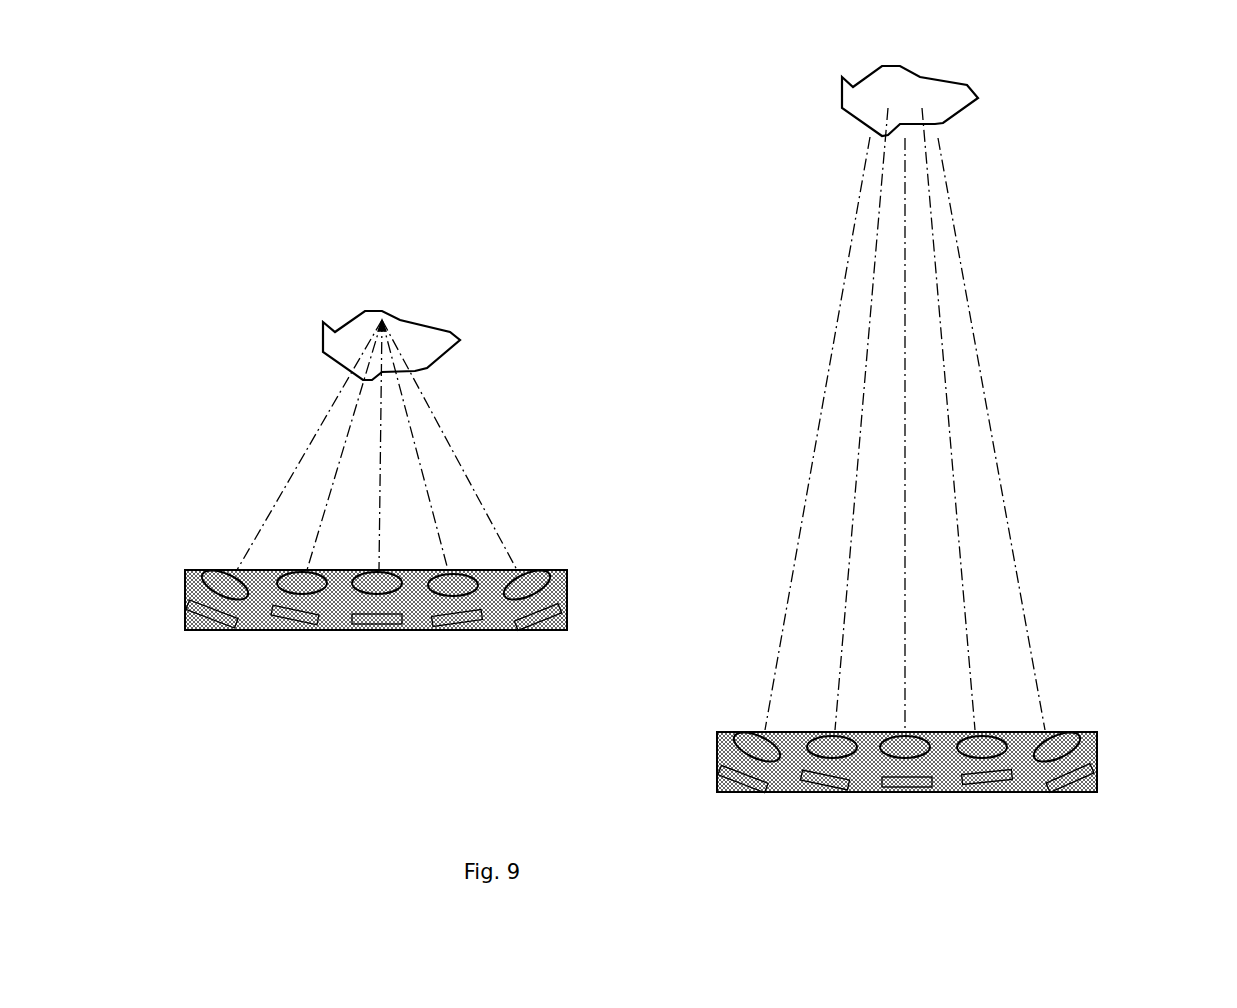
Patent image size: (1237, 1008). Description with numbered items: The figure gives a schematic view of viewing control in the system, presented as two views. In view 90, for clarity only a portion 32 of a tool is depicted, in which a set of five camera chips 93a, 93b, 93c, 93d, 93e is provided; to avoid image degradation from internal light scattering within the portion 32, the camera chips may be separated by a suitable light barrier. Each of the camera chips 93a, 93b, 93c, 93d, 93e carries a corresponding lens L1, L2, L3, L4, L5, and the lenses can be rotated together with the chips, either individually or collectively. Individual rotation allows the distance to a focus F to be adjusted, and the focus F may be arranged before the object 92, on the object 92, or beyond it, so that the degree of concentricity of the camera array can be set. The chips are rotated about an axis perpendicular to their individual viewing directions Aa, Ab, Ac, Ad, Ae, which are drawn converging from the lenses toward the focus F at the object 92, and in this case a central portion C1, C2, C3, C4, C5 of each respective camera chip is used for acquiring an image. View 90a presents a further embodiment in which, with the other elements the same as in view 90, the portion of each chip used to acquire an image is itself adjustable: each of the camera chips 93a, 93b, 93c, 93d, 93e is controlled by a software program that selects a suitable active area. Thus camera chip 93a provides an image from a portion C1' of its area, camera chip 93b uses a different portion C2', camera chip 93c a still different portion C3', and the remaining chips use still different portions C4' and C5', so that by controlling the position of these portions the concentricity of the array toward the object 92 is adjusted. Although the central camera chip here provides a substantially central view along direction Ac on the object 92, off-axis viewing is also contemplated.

The view 90 is at (407, 273).
The view 90a is at (768, 127).
The object 92 is at (445, 340).
The focus F is at (381, 320).
The individual viewing direction Aa is at (317, 427).
The individual viewing direction Ab is at (340, 447).
The individual viewing direction Ac is at (379, 482).
The individual viewing direction Ad is at (417, 448).
The individual viewing direction Ae is at (465, 469).
The portion of a tool 32 is at (567, 572).
The lens L1 is at (215, 568).
The lens L2 is at (288, 570).
The lens L3 is at (368, 570).
The lens L4 is at (435, 570).
The lens L5 is at (507, 568).
The central portion of camera chip C1 is at (187, 597).
The central portion of camera chip C2 is at (285, 640).
The central portion of camera chip C3 is at (391, 644).
The central portion of camera chip C4 is at (470, 639).
The central portion of camera chip C5 is at (558, 632).
The portion of the chip area C1' is at (753, 811).
The portion of the chip area C2' is at (840, 804).
The portion of the chip area C3' is at (920, 813).
The portion of the chip area C4' is at (995, 809).
The portion of the chip area C5' is at (1070, 803).
The camera chip 93a is at (230, 632).
The camera chip 93b is at (298, 630).
The camera chip 93c is at (376, 630).
The camera chip 93d is at (475, 632).
The camera chip 93e is at (532, 635).